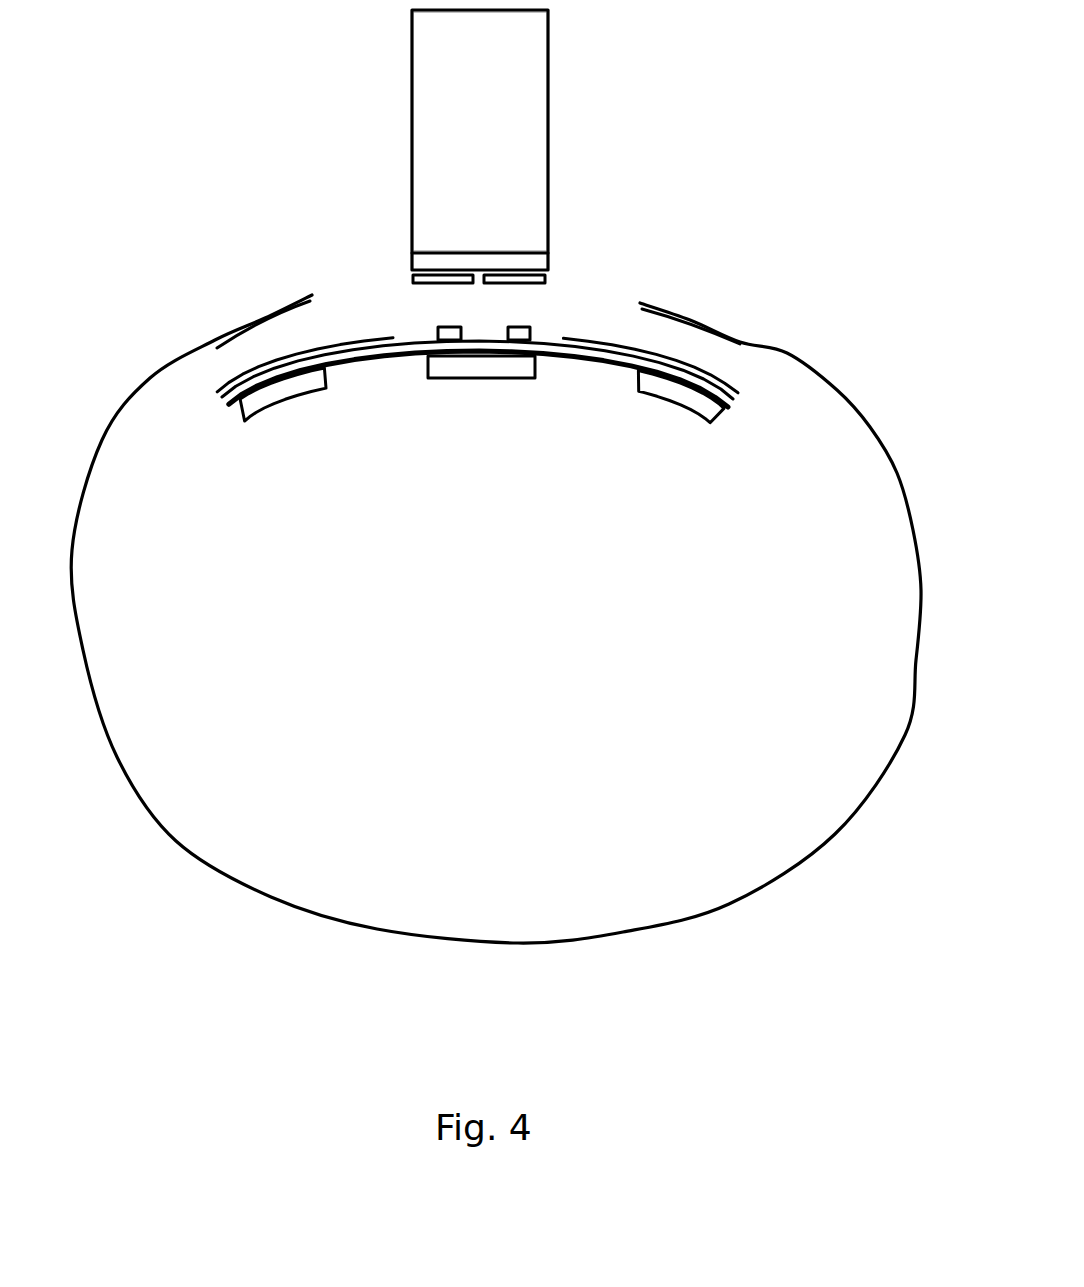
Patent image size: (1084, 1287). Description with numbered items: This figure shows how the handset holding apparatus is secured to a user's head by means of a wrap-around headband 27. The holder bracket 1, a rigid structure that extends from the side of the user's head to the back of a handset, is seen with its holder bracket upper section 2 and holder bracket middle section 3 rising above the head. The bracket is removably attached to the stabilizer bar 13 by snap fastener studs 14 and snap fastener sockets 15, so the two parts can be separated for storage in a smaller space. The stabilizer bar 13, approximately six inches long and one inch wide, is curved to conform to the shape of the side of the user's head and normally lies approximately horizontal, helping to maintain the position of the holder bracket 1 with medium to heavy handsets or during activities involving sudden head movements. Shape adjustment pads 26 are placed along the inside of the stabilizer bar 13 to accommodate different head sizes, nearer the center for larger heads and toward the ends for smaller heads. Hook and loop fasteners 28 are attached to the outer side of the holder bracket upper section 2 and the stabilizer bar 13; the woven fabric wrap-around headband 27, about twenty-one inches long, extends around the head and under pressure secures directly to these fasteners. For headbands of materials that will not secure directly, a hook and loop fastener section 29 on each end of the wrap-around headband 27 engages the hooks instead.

The holder bracket 1 is at (551, 97).
The holder bracket upper section 2 is at (422, 262).
The holder bracket middle section 3 is at (437, 121).
The stabilizer bar 13 is at (548, 349).
The snap fastener studs 14 is at (533, 331).
The snap fastener sockets 15 is at (549, 277).
The shape adjustment pads 26 is at (452, 370).
The wrap-around headband 27 is at (115, 740).
The hook and loop fasteners 28 is at (362, 333).
The hook and loop fastener section 29 is at (224, 342).